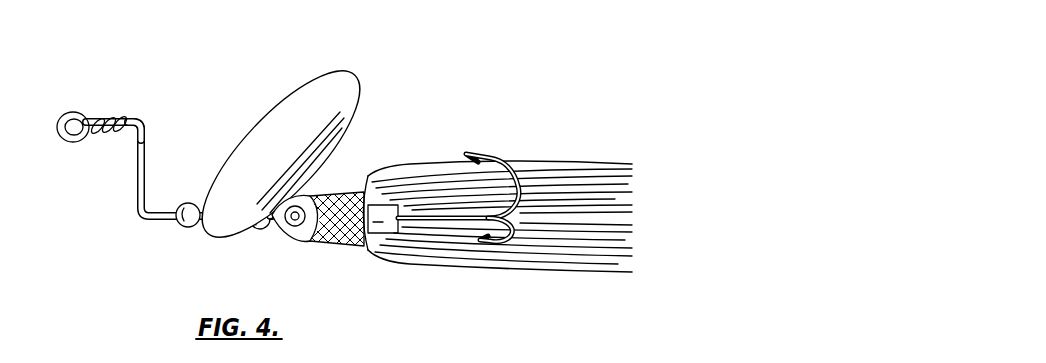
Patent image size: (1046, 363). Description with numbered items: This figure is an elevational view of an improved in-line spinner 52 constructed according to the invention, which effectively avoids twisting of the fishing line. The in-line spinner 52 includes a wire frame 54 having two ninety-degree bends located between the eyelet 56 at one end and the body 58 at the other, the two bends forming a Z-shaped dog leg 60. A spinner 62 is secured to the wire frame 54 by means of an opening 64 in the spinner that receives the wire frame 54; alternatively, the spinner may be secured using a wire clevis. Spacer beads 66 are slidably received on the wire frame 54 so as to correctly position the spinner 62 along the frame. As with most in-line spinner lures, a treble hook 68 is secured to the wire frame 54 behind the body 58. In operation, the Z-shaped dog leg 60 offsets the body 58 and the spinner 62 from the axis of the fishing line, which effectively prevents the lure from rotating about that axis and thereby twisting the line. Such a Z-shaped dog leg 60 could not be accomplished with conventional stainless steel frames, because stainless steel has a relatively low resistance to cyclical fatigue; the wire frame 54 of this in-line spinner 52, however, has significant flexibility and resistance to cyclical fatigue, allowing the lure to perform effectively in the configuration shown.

The in-line spinner 52 is at (383, 142).
The wire frame 54 is at (137, 214).
The eyelet 56 is at (73, 143).
The body 58 is at (343, 243).
The Z-shaped dog leg 60 is at (147, 137).
The spinner 62 is at (289, 118).
The opening 64 is at (216, 208).
The spacer beads 66 is at (186, 210).
The treble hook 68 is at (466, 152).